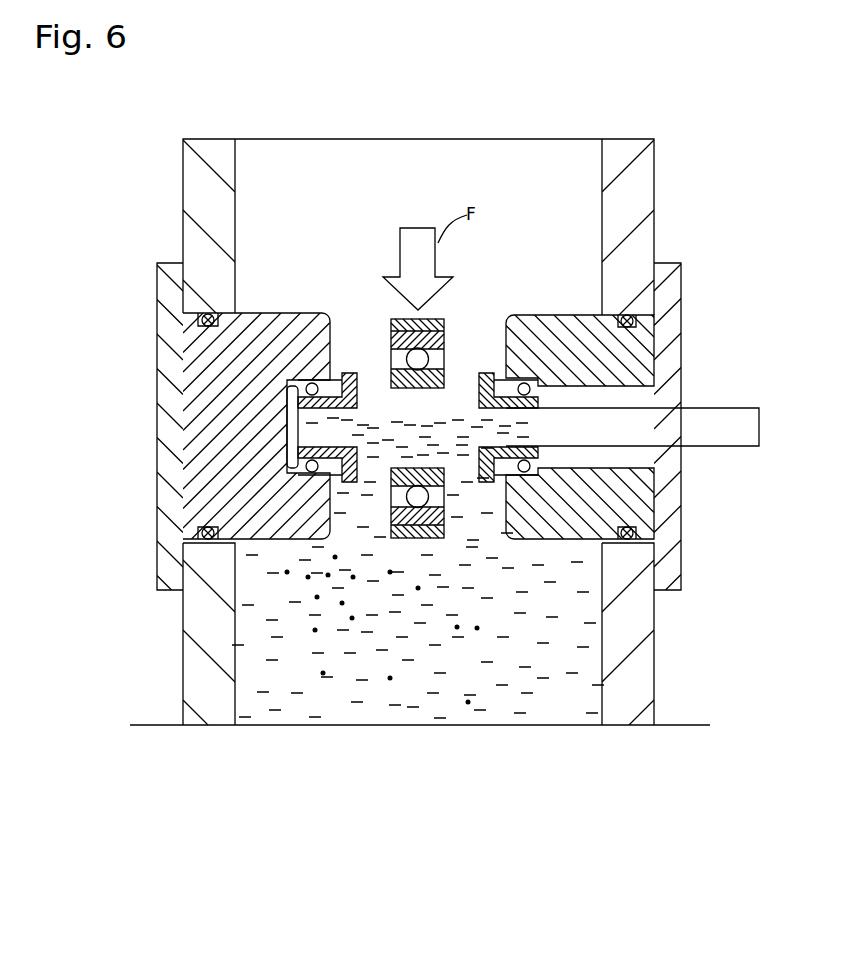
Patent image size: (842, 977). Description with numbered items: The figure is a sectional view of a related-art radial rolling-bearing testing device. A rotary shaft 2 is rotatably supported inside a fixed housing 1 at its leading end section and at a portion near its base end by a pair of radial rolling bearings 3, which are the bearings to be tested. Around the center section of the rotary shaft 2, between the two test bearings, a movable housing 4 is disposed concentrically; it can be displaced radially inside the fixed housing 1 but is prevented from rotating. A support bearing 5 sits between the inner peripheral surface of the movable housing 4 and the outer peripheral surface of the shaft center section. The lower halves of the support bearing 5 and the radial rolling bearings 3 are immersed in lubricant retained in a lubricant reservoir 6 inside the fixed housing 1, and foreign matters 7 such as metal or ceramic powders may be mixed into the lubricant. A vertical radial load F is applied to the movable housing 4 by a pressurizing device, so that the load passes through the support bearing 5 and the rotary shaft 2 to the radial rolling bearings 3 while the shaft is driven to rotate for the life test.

The fixed housing 1 is at (672, 176).
The rotary shaft 2 is at (722, 416).
The radial rolling bearing 3 is at (313, 388).
The movable housing 4 is at (432, 319).
The support bearing 5 is at (426, 352).
The lubricant reservoir 6 is at (552, 724).
The foreign matter 7 is at (466, 704).